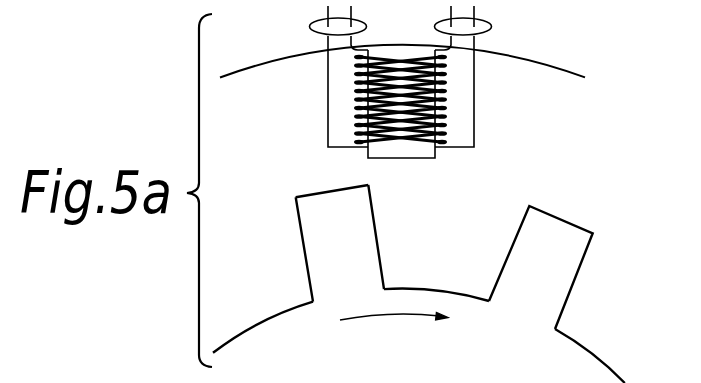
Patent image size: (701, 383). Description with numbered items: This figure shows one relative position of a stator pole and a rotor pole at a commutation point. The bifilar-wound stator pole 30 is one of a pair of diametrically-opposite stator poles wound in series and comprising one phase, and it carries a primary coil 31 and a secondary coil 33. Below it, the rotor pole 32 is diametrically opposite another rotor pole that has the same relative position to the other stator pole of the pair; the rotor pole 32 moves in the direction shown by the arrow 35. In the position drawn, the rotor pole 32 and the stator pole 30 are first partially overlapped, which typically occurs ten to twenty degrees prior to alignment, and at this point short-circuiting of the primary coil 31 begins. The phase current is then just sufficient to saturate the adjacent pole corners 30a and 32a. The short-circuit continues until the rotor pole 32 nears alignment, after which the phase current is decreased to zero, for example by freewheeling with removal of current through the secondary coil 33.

The stator pole 30 is at (436, 150).
The pole corner 30a is at (367, 160).
The primary coil 31 is at (309, 26).
The rotor pole 32 is at (305, 249).
The pole corner 32a is at (370, 186).
The secondary coil 33 is at (490, 27).
The arrow 35 is at (392, 316).